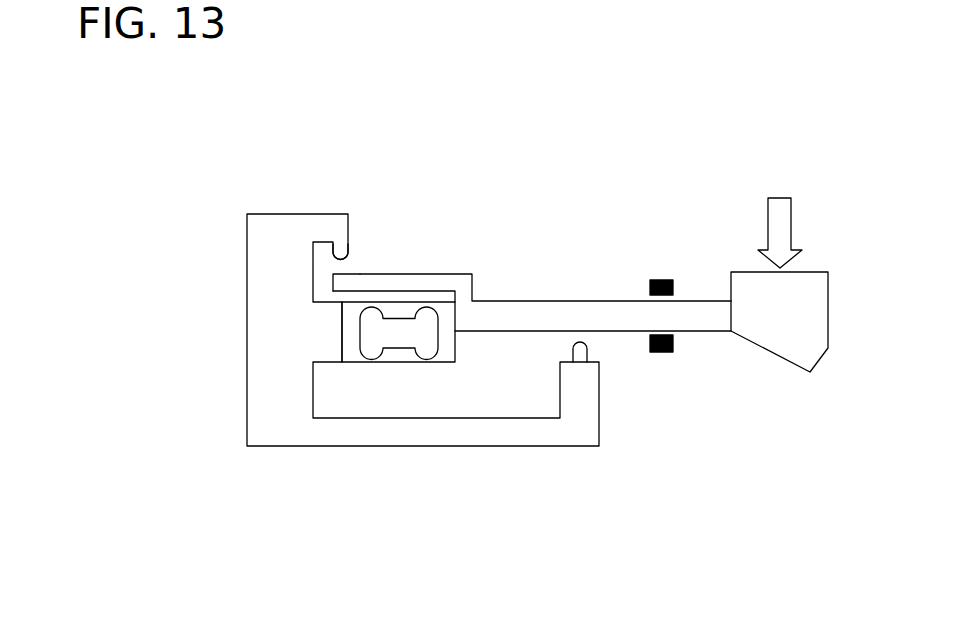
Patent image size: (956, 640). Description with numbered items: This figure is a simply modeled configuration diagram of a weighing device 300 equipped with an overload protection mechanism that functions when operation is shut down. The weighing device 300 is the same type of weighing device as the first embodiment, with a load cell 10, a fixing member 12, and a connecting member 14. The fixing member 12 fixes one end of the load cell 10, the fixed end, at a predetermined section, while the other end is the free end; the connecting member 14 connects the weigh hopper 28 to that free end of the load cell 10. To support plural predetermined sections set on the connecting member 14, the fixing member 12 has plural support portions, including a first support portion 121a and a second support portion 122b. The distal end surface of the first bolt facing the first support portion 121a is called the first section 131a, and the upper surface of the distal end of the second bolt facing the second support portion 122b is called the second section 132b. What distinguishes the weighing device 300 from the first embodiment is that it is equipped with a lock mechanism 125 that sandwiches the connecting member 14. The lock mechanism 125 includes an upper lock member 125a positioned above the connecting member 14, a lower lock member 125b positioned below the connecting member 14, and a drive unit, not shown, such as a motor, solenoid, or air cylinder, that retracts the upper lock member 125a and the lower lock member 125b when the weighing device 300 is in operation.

The load cell 10 is at (353, 358).
The fixing member 12 is at (270, 228).
The connecting member 14 is at (512, 313).
The weigh hopper 28 is at (783, 337).
The first support portion 121a is at (585, 349).
The second support portion 122b is at (345, 250).
The lock mechanism 125 is at (753, 215).
The upper lock member 125a is at (655, 280).
The lower lock member 125b is at (673, 342).
The first section 131a is at (579, 325).
The second section 132b is at (349, 271).
The weighing device 300 is at (591, 166).